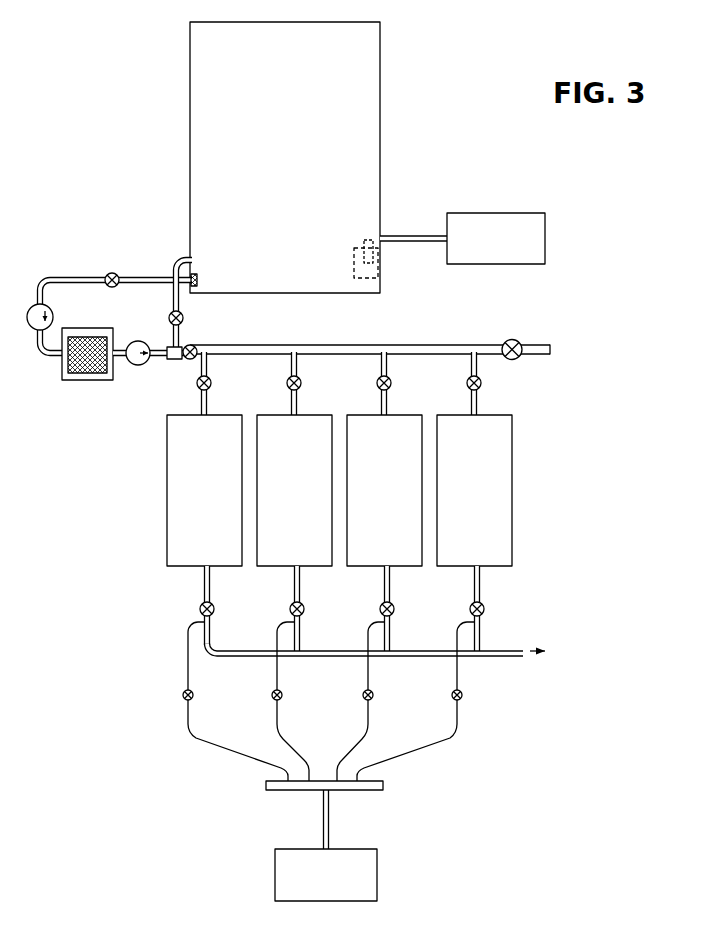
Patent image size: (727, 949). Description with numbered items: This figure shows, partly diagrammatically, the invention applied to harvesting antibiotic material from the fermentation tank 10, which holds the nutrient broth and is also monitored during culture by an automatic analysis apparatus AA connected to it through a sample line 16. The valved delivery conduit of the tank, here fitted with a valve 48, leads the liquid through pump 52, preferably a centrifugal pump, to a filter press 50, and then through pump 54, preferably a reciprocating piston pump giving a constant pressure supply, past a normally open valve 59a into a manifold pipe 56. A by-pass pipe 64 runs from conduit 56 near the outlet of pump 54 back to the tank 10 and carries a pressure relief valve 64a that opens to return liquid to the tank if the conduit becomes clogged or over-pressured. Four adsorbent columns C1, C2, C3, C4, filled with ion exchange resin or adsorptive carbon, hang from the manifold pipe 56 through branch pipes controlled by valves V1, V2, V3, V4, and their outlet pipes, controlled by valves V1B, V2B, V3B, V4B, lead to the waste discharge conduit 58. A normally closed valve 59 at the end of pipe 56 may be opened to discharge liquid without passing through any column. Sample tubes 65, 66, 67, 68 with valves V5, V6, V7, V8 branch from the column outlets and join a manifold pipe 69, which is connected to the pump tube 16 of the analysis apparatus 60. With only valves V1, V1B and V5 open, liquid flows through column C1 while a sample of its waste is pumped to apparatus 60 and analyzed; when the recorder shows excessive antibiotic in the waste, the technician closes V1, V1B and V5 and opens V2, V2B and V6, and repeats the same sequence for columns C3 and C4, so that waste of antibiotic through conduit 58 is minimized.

The fermentation tank 10 is at (370, 98).
The pump tube 16 is at (400, 236).
The automatic analysis apparatus AA is at (506, 211).
The valve 48 is at (120, 276).
The pump 52 is at (54, 312).
The filter press 50 is at (62, 372).
The pump 54 is at (138, 366).
The manifold pipe 56 is at (337, 346).
The valve 59 is at (505, 342).
The valve 59a is at (186, 361).
The by-pass pipe 64 is at (171, 300).
The pressure relief valve 64a is at (184, 318).
The valve V1 is at (211, 383).
The valve V2 is at (301, 383).
The valve V3 is at (391, 383).
The valve V4 is at (481, 383).
The adsorbent column C1 is at (216, 494).
The adsorbent column C2 is at (306, 494).
The adsorbent column C3 is at (396, 494).
The adsorbent column C4 is at (486, 494).
The valve V1B is at (214, 606).
The valve V2B is at (304, 606).
The valve V3B is at (394, 606).
The valve V4B is at (484, 606).
The discharge conduit 58 is at (509, 659).
The tube 65 is at (185, 678).
The tube 66 is at (275, 678).
The tube 67 is at (366, 678).
The tube 68 is at (455, 678).
The valve V5 is at (183, 699).
The valve V6 is at (272, 699).
The valve V7 is at (363, 699).
The valve V8 is at (452, 699).
The manifold pipe 69 is at (379, 786).
The analysis apparatus 60 is at (351, 896).